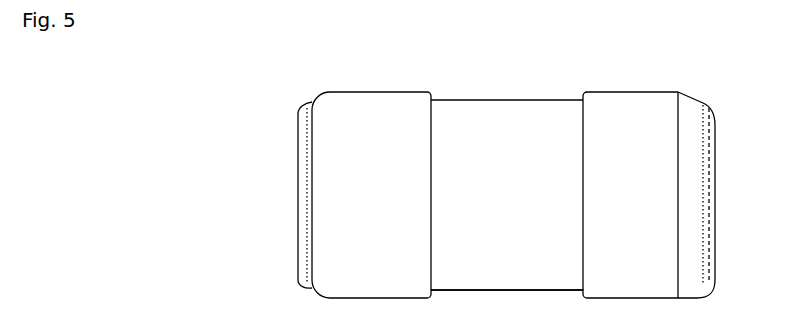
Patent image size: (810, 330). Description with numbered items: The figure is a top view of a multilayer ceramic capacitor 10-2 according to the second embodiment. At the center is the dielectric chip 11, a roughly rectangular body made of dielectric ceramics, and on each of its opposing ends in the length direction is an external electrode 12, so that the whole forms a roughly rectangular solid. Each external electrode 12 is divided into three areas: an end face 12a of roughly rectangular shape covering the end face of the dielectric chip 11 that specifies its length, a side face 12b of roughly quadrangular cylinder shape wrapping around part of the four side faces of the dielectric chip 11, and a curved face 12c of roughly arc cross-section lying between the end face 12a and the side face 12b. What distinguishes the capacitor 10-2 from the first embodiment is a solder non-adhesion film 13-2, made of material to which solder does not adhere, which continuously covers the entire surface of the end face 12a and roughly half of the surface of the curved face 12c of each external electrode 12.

The multilayer ceramic capacitor 10-2 is at (340, 89).
The dielectric chip 11 is at (486, 100).
The external electrode 12 is at (392, 92).
The end face 12a is at (306, 187).
The side face 12b is at (364, 105).
The curved face 12c is at (317, 109).
The solder non-adhesion film 13-2 is at (298, 215).